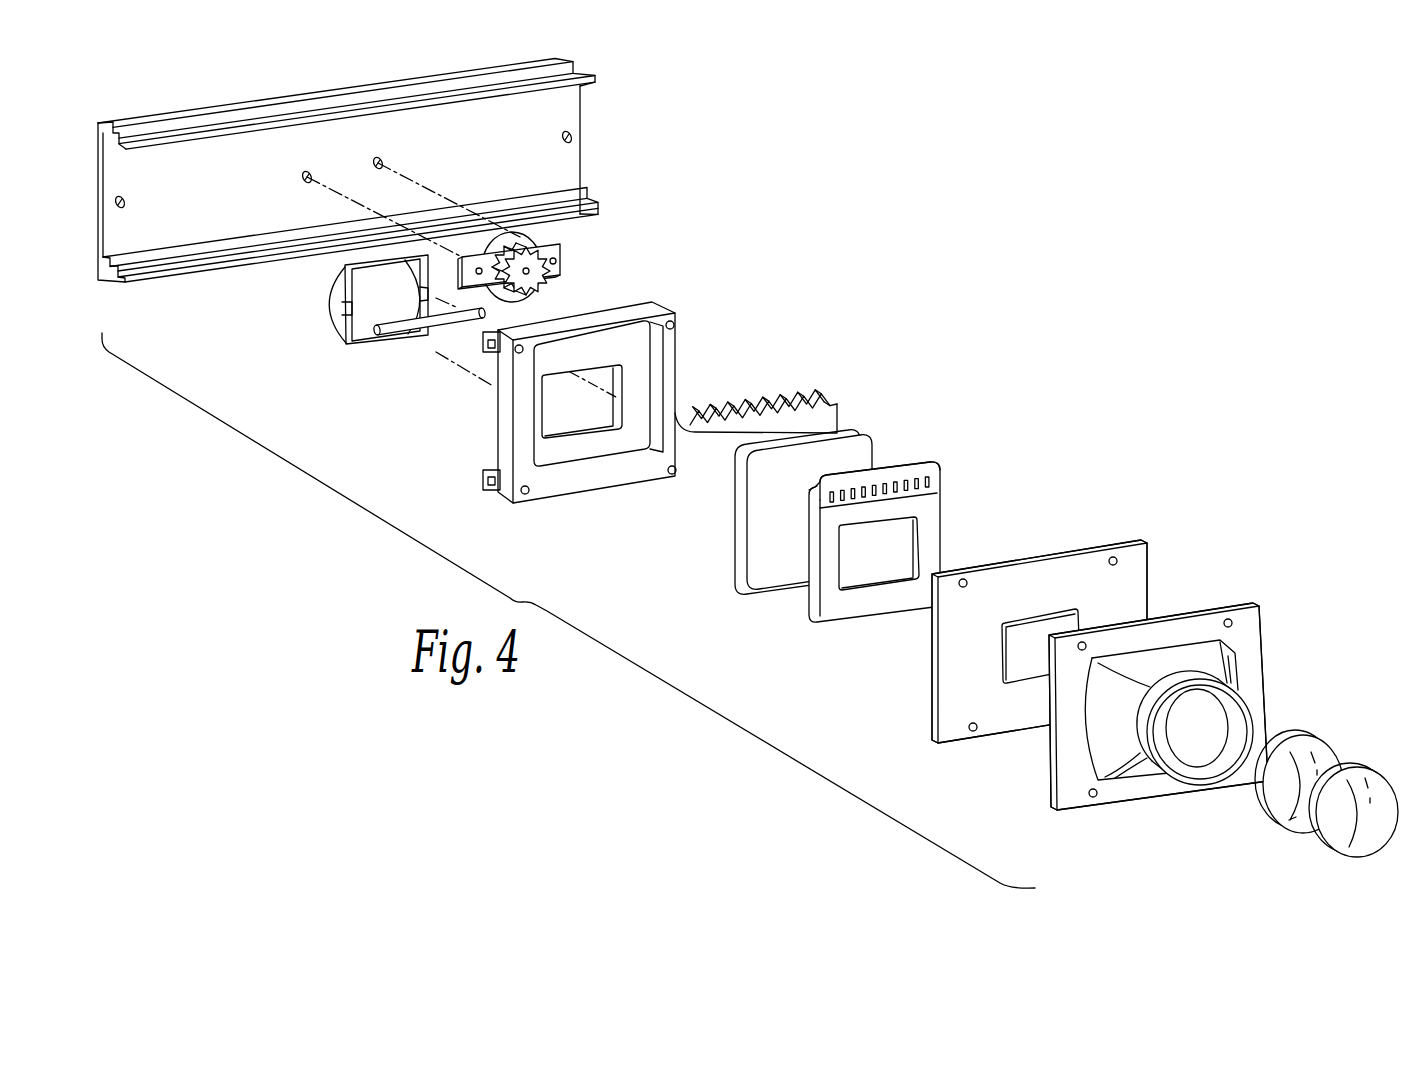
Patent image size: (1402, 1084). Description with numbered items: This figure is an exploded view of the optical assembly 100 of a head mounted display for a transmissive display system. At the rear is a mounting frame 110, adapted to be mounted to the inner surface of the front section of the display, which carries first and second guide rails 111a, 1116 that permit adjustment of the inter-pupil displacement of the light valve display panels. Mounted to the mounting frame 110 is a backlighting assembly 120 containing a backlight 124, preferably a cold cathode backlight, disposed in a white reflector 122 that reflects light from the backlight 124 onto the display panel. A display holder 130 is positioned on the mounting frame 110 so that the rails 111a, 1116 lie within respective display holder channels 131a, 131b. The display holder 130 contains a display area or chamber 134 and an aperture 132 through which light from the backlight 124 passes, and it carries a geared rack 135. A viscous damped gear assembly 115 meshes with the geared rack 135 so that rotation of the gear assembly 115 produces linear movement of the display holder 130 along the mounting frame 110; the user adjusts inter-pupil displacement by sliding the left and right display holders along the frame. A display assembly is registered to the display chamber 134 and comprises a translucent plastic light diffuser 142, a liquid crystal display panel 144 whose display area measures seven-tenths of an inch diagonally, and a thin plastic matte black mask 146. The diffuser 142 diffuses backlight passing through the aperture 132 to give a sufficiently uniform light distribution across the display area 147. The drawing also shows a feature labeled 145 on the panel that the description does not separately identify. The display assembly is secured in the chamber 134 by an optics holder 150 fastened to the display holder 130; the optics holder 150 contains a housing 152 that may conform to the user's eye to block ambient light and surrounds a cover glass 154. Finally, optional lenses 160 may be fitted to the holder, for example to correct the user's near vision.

The optical device assembly 100 is at (1132, 383).
The mounting frame 110 is at (500, 162).
The first guide rail 111a is at (580, 63).
The lower flange of rail 1116 is at (580, 212).
The viscous damped gear assembly 115 is at (568, 258).
The backlighting assembly 120 is at (372, 325).
The white reflector 122 is at (397, 299).
The backlight 124 is at (410, 338).
The display holder 130 is at (618, 416).
The display holder channel 131a is at (488, 353).
The display holder channel 131b is at (483, 478).
The aperture 132 is at (579, 410).
The display area (display chamber) 134 is at (615, 334).
The geared rack 135 is at (741, 400).
The translucent plastic light diffuser 142 is at (795, 495).
The liquid crystal display panel 144 is at (865, 557).
The vent slots 145 is at (938, 486).
The thin plastic matte black mask 146 is at (882, 551).
The display area 147 is at (983, 663).
The optics holder 150 is at (1185, 736).
The housing 152 is at (1247, 630).
The cover glass 154 is at (1236, 717).
The optional lenses 160 is at (1350, 735).